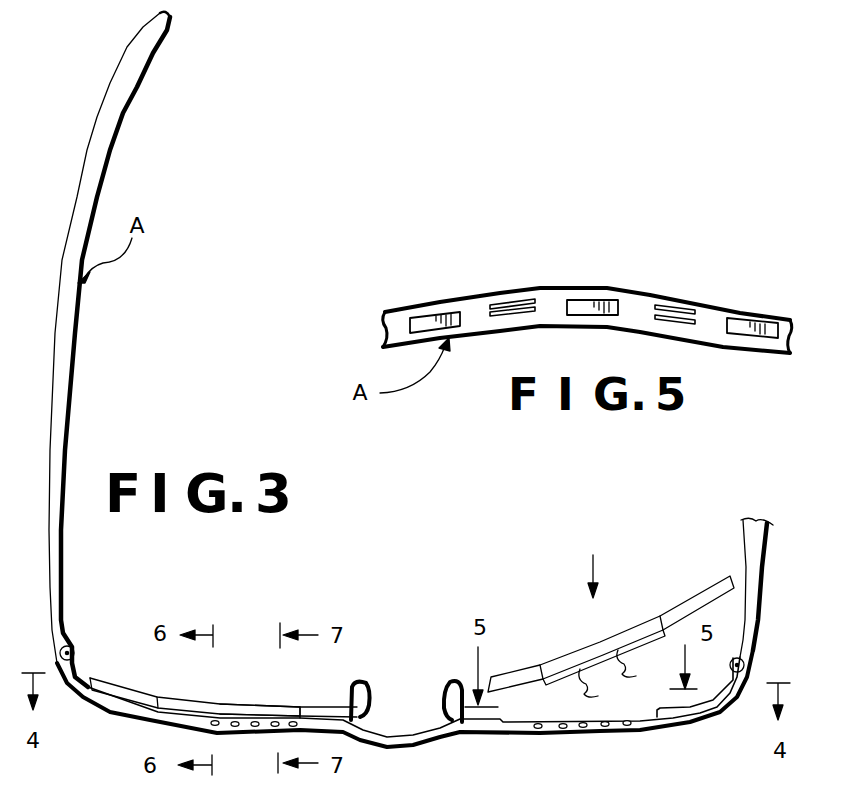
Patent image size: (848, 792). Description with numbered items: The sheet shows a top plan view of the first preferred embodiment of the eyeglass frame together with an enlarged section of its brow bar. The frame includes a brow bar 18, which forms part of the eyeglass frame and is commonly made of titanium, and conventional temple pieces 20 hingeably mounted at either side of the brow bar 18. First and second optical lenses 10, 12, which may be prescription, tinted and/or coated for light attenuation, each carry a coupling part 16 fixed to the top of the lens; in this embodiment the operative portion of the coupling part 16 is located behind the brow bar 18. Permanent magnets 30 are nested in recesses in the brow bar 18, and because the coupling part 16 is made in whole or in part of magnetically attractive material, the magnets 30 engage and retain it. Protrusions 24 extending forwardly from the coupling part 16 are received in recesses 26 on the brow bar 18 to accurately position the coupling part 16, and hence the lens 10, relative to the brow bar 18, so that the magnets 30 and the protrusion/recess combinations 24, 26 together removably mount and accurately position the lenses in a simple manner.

In FIG. 3, the first optical lens 10 is at (677, 607).
In FIG. 3, the second optical lens 12 is at (126, 681).
In FIG. 3, the coupling part 16 is at (240, 710).
In FIG. 3, the brow bar 18 is at (440, 741).
In FIG. 5, the brow bar 18 is at (397, 320).
In FIG. 3, the temple pieces 20 is at (75, 338).
In FIG. 3, the protrusions 24 is at (607, 679).
In FIG. 5, the recesses 26 is at (513, 300).
In FIG. 5, the permanent magnets 30 is at (423, 317).